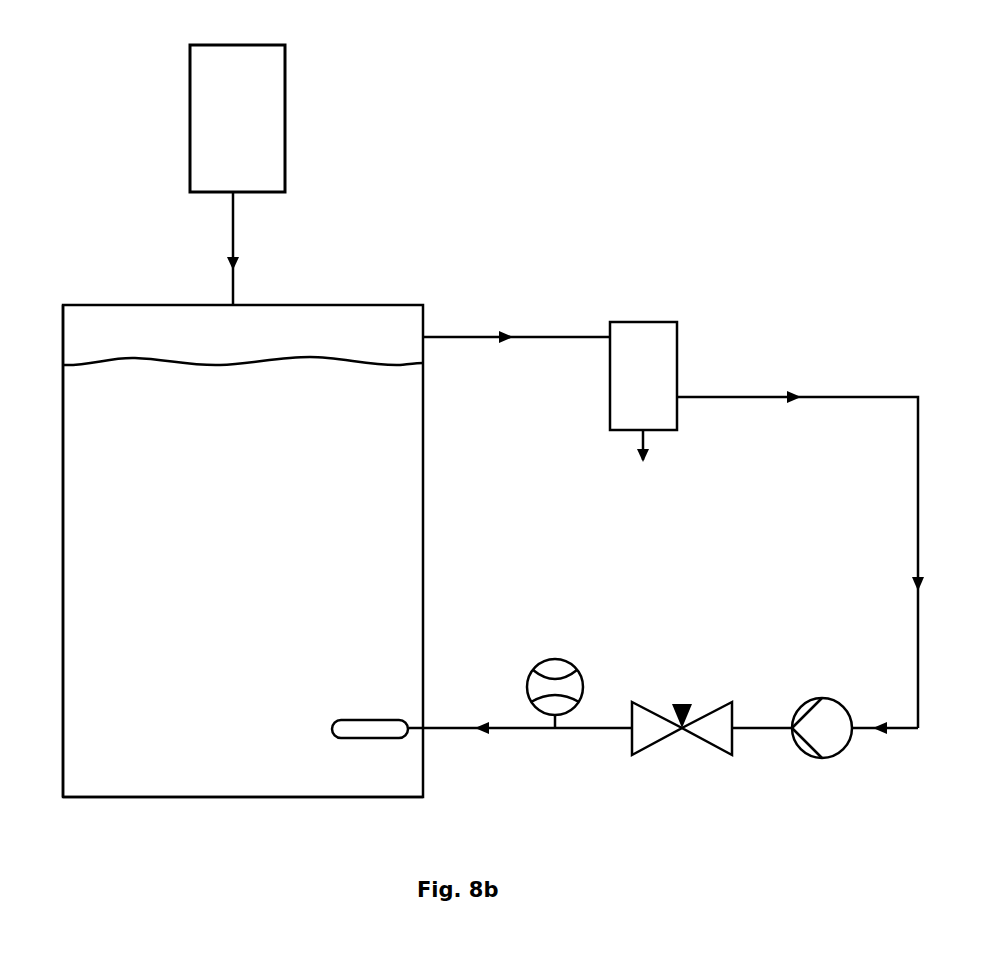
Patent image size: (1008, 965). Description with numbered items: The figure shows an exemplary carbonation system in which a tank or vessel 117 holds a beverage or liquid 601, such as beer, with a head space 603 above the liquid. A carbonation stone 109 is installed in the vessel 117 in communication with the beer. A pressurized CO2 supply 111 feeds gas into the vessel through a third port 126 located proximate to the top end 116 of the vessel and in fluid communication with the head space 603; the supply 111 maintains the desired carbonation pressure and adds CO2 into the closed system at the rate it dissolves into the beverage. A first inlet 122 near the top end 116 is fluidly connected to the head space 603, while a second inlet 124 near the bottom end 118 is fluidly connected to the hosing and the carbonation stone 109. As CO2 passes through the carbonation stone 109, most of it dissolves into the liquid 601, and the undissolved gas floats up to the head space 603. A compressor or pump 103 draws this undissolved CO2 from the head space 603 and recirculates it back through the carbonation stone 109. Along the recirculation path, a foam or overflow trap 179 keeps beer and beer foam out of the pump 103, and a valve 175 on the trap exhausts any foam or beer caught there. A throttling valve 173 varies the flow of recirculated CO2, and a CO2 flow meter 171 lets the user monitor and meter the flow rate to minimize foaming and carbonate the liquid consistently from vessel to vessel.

The CO2 supply 111 is at (237, 118).
The top end 116 is at (98, 292).
The vessel 117 is at (58, 388).
The bottom end 118 is at (101, 805).
The first inlet/port 122 is at (432, 325).
The second inlet/port 124 is at (431, 740).
The third port/inlet 126 is at (245, 292).
The liquid 601 is at (225, 420).
The head space 603 is at (243, 347).
The foam/overflow trap 179 is at (582, 386).
The valve 175 is at (651, 464).
The pump 103 is at (820, 686).
The throttling valve 173 is at (681, 684).
The CO2 flow meter 171 is at (544, 641).
The carbonation stone 109 is at (318, 699).